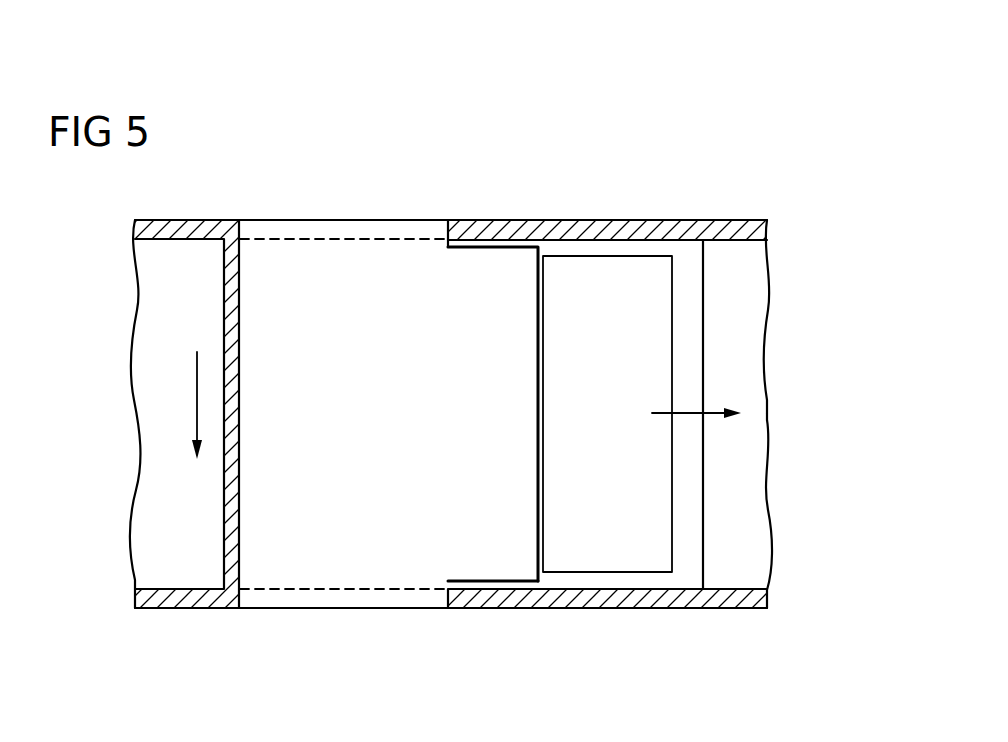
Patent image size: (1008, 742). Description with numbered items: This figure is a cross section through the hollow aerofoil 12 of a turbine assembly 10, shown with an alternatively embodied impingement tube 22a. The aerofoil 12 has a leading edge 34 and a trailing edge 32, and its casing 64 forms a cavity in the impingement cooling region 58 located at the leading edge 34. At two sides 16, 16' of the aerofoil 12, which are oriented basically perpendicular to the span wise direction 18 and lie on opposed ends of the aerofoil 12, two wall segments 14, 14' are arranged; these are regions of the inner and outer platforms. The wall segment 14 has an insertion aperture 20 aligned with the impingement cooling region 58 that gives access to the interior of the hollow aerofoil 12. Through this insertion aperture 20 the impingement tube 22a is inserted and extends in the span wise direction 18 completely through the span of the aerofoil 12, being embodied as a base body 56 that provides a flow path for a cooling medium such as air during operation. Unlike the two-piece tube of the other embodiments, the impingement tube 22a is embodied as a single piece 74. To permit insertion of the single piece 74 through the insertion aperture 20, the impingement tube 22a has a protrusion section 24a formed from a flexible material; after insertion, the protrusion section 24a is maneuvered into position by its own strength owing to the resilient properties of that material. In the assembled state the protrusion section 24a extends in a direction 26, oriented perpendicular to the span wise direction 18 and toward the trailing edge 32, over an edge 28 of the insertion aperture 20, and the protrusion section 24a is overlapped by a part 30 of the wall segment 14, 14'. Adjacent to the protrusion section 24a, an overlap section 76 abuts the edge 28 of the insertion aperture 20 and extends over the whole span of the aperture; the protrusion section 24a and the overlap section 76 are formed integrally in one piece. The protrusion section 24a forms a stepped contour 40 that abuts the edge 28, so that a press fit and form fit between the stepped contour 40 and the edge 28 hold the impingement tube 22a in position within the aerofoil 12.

The turbine assembly 10 is at (803, 186).
The aerofoil 12 is at (165, 600).
The wall segment 14 is at (607, 188).
The wall segment 14' is at (607, 642).
The side 16 is at (815, 317).
The side 16' is at (817, 514).
The span wise direction 18 is at (197, 394).
The insertion aperture 20 is at (343, 165).
The impingement tube 22a is at (343, 642).
The single piece 74 is at (308, 600).
The protrusion section 24a is at (490, 558).
The direction 26 is at (713, 418).
The edge 28 is at (486, 416).
The part 30 is at (514, 232).
The trailing edge 32 is at (775, 410).
The leading edge 34 is at (126, 455).
The stepped contour 40 is at (450, 247).
The base body 56 is at (413, 600).
The impingement cooling region 58 is at (267, 610).
The casing 64 is at (583, 598).
The overlap section 76 is at (378, 213).